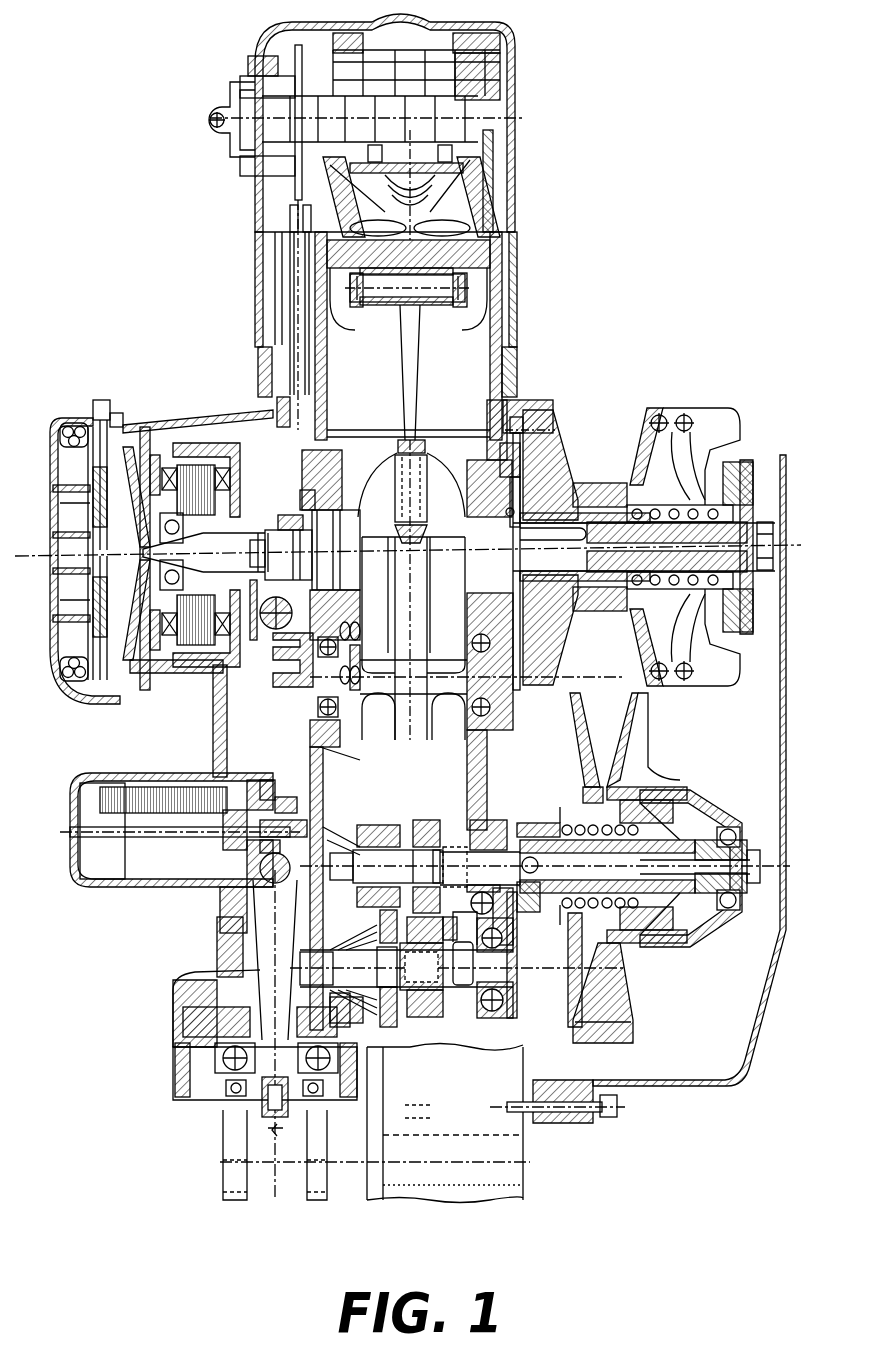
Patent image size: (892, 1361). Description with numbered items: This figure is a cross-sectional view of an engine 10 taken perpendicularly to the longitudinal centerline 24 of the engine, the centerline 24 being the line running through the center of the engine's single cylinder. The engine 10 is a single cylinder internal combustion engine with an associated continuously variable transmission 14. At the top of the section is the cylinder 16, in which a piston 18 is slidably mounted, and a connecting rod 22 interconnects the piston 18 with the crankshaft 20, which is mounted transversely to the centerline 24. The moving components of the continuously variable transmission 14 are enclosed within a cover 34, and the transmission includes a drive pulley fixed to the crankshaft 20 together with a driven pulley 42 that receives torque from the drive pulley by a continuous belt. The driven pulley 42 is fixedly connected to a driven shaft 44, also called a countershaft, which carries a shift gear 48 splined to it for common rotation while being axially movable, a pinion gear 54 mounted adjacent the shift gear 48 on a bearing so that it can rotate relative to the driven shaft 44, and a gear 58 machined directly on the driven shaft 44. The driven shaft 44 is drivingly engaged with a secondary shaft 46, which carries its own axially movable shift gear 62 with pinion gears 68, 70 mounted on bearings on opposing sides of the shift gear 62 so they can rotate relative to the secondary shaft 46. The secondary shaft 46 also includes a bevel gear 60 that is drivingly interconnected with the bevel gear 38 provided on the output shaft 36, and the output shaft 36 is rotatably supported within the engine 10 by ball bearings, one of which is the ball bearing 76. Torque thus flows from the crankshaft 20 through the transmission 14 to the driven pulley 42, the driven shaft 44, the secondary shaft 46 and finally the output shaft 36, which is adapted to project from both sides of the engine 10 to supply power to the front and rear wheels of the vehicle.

The engine 10 is at (435, 640).
The continuously variable transmission 14 is at (693, 408).
The cylinder 16 is at (486, 328).
The piston 18 is at (447, 290).
The crankshaft 20 is at (277, 530).
The connecting rod 22 is at (432, 391).
The centerline 24 is at (313, 738).
The cover 34 is at (785, 733).
The output shaft 36 is at (265, 943).
The bevel gear 38 is at (205, 1022).
The driven pulley 42 is at (620, 1010).
The driven shaft 44 is at (433, 862).
The secondary shaft 46 is at (475, 1000).
The shift gear 48 is at (390, 843).
The pinion gear 54 is at (430, 837).
The gear 58 is at (467, 847).
The bevel gear 60 is at (358, 990).
The shift gear 62 is at (445, 1000).
The pinion gear 68 is at (385, 1010).
The pinion gear 70 is at (470, 1012).
The ball bearing 76 is at (212, 1092).